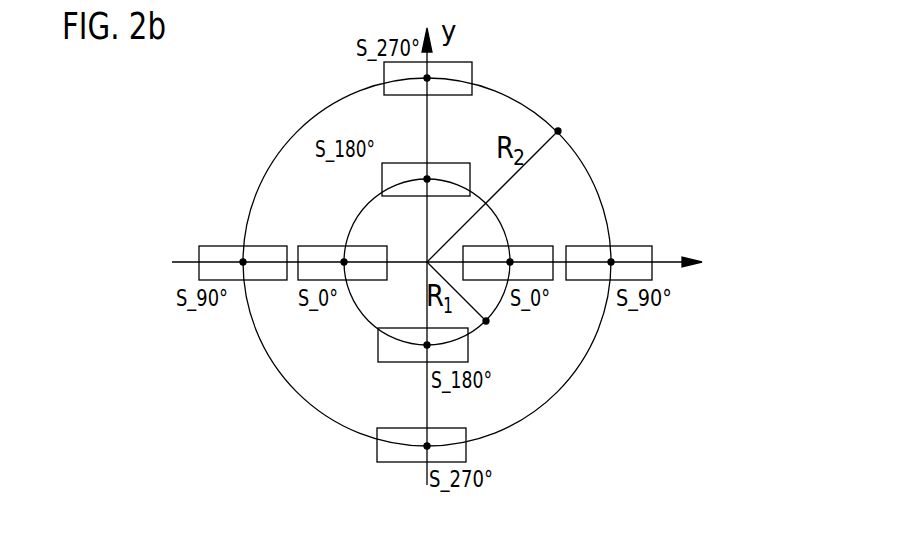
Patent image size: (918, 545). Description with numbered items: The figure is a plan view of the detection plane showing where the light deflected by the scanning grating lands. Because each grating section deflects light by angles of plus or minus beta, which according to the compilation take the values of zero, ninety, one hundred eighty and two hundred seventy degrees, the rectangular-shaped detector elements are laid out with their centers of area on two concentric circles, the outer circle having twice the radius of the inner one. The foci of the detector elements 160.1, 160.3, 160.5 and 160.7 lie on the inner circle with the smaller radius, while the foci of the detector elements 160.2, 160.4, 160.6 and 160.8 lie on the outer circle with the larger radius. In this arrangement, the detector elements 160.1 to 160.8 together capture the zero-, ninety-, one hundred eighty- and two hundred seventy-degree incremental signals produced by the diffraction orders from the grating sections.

The detector element 160.1 is at (525, 256).
The detector element 160.2 is at (625, 252).
The detector element 160.3 is at (457, 175).
The detector element 160.4 is at (463, 76).
The detector element 160.5 is at (315, 253).
The detector element 160.6 is at (218, 253).
The detector element 160.7 is at (390, 350).
The detector element 160.8 is at (397, 453).